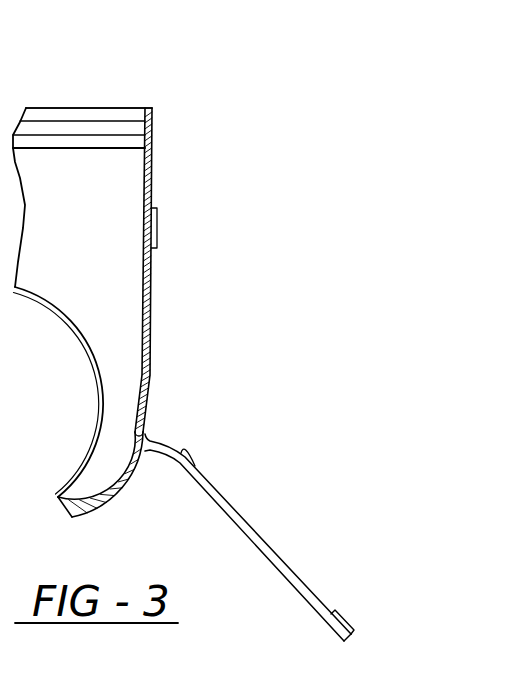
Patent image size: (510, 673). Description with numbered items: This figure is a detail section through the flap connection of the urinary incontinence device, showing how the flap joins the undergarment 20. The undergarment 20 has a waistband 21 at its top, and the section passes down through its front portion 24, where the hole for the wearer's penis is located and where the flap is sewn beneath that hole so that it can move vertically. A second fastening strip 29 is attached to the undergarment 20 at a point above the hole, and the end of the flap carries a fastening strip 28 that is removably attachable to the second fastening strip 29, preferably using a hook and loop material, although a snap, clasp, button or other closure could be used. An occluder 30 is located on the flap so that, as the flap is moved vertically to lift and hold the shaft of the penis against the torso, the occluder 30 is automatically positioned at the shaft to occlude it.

The undergarment 20 is at (153, 125).
The waistband 21 is at (113, 113).
The second fastening strip 29 is at (157, 222).
The front portion 24 is at (128, 483).
The occluder 30 is at (189, 447).
The fastening strip 28 is at (348, 608).